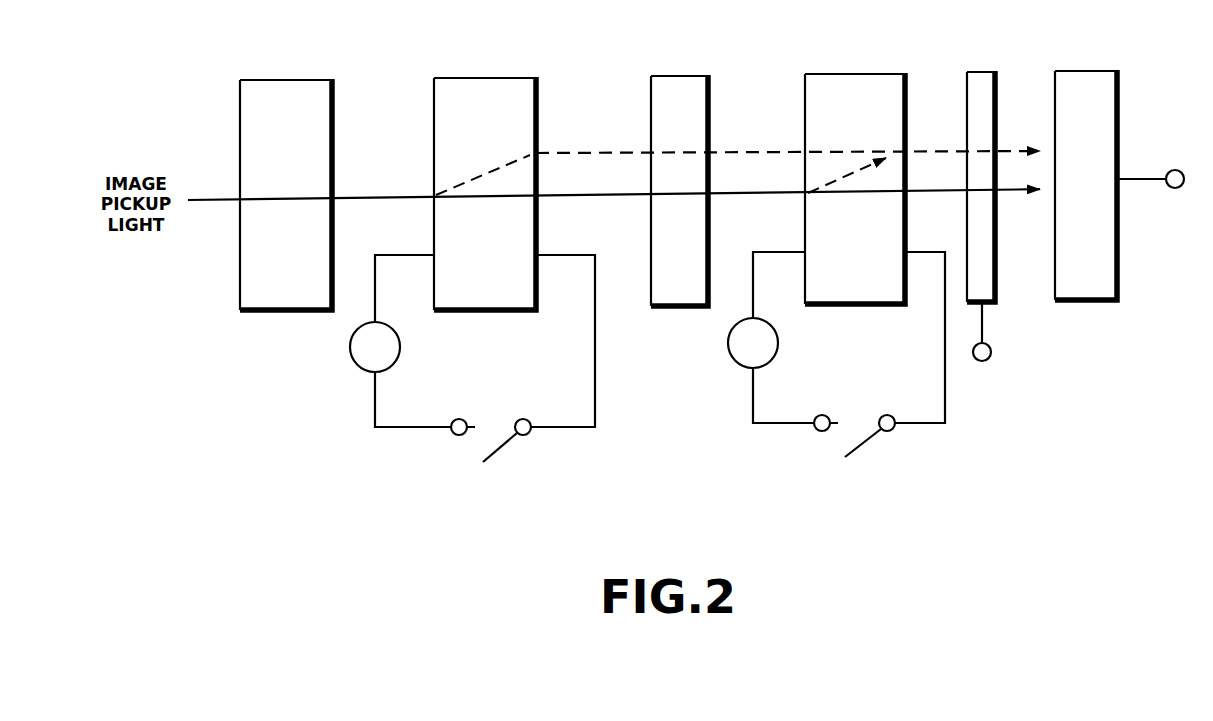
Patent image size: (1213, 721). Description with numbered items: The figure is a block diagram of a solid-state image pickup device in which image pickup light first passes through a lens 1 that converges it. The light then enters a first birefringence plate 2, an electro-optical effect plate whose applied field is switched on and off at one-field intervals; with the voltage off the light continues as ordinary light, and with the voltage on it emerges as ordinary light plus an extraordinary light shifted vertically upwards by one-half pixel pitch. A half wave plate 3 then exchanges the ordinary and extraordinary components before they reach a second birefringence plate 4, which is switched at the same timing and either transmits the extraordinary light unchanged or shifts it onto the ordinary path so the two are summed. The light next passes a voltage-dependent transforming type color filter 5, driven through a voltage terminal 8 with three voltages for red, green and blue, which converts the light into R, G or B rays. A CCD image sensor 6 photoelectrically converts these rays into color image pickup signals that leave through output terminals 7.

The lens 1 is at (287, 86).
The first birefringence plate 2 is at (485, 86).
The half wave plate 3 is at (678, 86).
The second birefringence plate 4 is at (854, 77).
The voltage-dependent transforming type color filter 5 is at (980, 77).
The CCD image sensor 6 is at (1087, 77).
The output terminals 7 is at (1175, 170).
The voltage terminal 8 is at (991, 352).